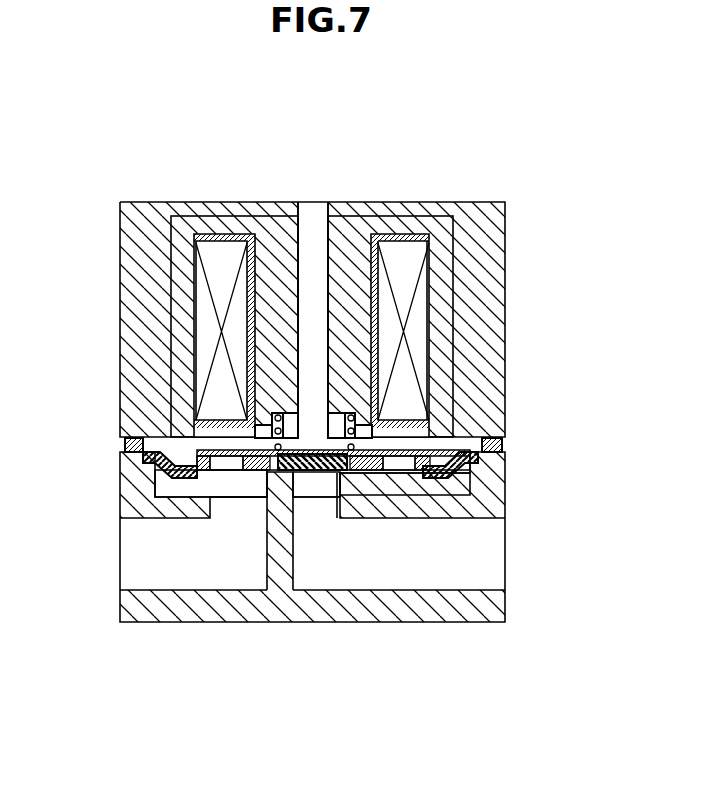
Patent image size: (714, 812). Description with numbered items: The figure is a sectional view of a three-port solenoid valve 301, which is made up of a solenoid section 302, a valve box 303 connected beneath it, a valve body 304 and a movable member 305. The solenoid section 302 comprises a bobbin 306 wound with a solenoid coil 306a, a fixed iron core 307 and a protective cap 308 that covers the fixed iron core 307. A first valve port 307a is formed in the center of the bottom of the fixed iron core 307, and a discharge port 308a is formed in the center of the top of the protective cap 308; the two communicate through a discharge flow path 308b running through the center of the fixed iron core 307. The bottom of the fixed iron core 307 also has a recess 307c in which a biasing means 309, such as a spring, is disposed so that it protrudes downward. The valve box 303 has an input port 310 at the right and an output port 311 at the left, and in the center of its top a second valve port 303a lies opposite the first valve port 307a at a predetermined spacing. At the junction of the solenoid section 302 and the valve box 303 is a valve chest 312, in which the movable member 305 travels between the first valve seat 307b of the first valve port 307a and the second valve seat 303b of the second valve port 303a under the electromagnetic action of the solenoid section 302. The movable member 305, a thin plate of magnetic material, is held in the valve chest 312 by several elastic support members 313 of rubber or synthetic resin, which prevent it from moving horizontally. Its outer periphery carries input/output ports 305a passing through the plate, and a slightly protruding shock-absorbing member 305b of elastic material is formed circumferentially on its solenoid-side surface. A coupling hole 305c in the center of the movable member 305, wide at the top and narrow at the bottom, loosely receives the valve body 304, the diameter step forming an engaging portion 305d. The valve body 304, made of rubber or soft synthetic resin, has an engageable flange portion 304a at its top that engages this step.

The solenoid valve 301 is at (512, 157).
The solenoid section 302 is at (507, 236).
The valve box 303 is at (515, 471).
The second valve port 303a is at (345, 480).
The second valve seat 303b is at (373, 474).
The valve body 304 is at (318, 480).
The engageable flange portion 304a is at (417, 483).
The movable member 305 is at (224, 470).
The input/output ports 305a is at (242, 475).
The shock-absorbing member 305b is at (193, 443).
The coupling hole 305c is at (305, 477).
The engaging portion 305d is at (262, 475).
The bobbin 306 is at (262, 245).
The solenoid coil 306a is at (218, 262).
The fixed iron core 307 is at (381, 228).
The first valve port 307a is at (310, 423).
The first valve seat 307b is at (352, 440).
The recess 307c is at (356, 447).
The protective cap 308 is at (359, 203).
The discharge port 308a is at (313, 232).
The discharge flow path 308b is at (317, 307).
The biasing means 309 is at (267, 427).
The input port 310 is at (487, 548).
The output port 311 is at (158, 557).
The valve chest 312 is at (126, 441).
The support members 313 is at (163, 474).